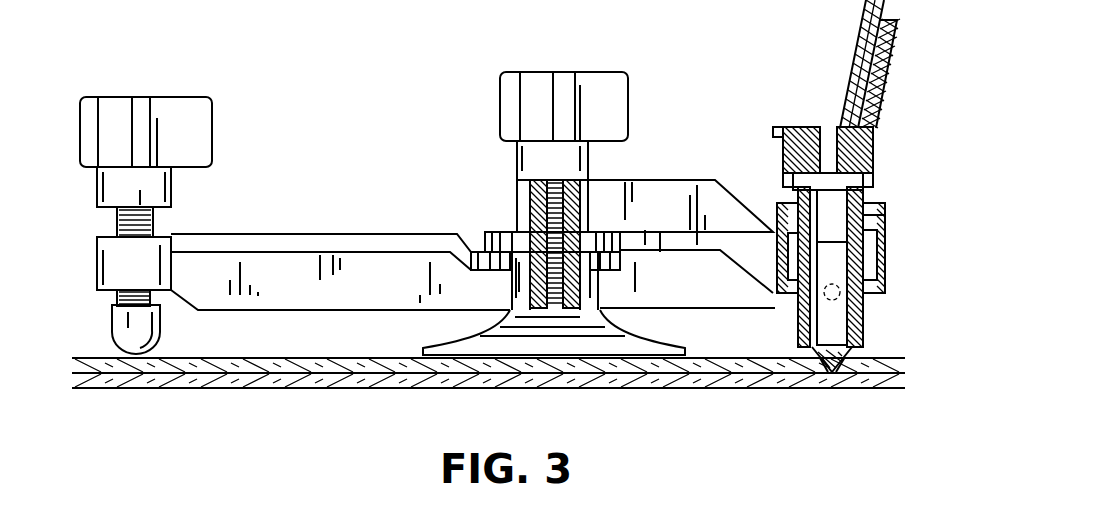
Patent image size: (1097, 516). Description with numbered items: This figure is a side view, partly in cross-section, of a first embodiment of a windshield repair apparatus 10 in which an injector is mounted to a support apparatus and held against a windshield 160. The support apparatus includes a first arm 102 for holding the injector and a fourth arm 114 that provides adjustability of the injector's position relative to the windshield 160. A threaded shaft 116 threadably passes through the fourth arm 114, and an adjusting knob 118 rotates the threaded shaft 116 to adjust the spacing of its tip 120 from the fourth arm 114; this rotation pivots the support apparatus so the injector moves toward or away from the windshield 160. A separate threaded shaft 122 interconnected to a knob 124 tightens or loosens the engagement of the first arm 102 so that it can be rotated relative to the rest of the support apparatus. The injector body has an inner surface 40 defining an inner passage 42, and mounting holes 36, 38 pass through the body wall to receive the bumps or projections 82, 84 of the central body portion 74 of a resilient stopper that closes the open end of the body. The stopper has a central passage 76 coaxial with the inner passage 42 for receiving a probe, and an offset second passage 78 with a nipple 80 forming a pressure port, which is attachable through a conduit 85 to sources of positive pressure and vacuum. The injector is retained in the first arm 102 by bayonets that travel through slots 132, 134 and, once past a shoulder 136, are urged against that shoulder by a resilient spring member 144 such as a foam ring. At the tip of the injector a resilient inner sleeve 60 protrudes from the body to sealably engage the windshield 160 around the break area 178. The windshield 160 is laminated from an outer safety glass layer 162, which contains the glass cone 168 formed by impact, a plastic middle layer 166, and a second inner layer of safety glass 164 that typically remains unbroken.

The windshield repair apparatus 10 is at (106, 76).
The adjusting knob 118 is at (163, 97).
The threaded shaft 116 is at (153, 220).
The tip 120 is at (160, 330).
The fourth arm 114 is at (290, 234).
The knob 124 is at (505, 82).
The threaded shaft 122 is at (520, 200).
The first arm 102 is at (643, 178).
The windshield 160 is at (265, 390).
The slot 132 is at (792, 300).
The inner passage 42 is at (866, 195).
The bump or projection 82 is at (783, 140).
The bump or projection 84 is at (870, 136).
The central passage 76 is at (786, 128).
The mounting hole 36 is at (785, 160).
The mounting hole 38 is at (870, 158).
The central body portion 74 is at (795, 178).
The shoulder 136 is at (781, 293).
The slot 134 is at (875, 268).
The resilient spring member 144 is at (887, 224).
The inner surface 40 is at (885, 212).
The nipple 80 is at (866, 63).
The second passage 78 is at (862, 88).
The conduit 85 is at (878, 30).
The resilient inner sleeve 60 is at (805, 356).
The break area 178 is at (828, 360).
The glass cone 168 is at (838, 372).
The outer safety glass layer 162 is at (872, 348).
The plastic middle layer 166 is at (893, 357).
The second inner layer of safety glass 164 is at (880, 385).